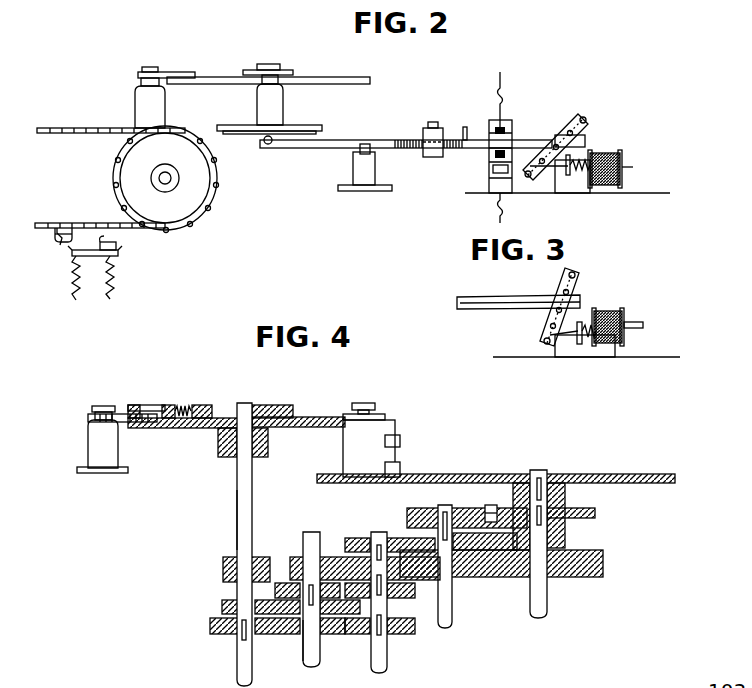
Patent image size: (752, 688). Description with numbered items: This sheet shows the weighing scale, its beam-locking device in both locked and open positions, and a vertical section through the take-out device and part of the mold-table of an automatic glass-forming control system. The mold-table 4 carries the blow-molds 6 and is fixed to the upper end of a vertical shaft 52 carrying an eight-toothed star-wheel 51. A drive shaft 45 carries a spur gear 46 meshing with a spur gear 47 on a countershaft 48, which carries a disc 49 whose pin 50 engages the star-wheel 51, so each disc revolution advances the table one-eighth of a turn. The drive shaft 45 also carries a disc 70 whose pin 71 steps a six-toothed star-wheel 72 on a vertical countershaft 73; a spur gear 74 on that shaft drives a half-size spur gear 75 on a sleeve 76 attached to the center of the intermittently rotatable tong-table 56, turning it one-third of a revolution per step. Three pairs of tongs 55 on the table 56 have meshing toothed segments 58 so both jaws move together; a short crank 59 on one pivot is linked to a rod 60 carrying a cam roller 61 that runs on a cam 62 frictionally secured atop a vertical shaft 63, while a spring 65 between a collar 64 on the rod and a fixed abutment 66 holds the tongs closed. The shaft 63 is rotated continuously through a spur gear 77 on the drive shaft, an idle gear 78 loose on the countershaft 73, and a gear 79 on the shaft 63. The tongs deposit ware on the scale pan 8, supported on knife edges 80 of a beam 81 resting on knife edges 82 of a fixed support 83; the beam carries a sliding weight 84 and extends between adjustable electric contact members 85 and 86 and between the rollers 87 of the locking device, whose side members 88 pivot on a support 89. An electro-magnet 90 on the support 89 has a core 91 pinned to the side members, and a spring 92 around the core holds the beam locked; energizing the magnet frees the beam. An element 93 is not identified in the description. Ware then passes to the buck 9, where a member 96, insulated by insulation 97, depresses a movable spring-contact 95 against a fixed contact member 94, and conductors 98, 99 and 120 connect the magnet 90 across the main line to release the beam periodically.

In FIG. 4, the mold-table 4 is at (622, 474).
In FIG. 4, the blow-molds 6 is at (343, 452).
In FIG. 2, the scale pan 8 is at (232, 125).
In FIG. 2, the endless conveyor or buck 9 is at (80, 128).
In FIG. 4, the drive shaft 45 is at (379, 668).
In FIG. 4, the spur gear 46 is at (362, 540).
In FIG. 4, the spur gear 47 is at (478, 542).
In FIG. 4, the countershaft 48 is at (452, 602).
In FIG. 4, the disc 49 is at (422, 508).
In FIG. 4, the pin 50 is at (490, 505).
In FIG. 4, the star-wheel 51 is at (582, 508).
In FIG. 4, the vertical shaft 52 is at (545, 596).
In FIG. 2, the tongs 55 is at (170, 73).
In FIG. 4, the tongs 55 is at (92, 417).
In FIG. 4, the intermittently rotatable table 56 is at (318, 413).
In FIG. 4, the toothed segments 58 is at (141, 424).
In FIG. 4, the short crank 59 is at (130, 410).
In FIG. 4, the rod 60 is at (150, 408).
In FIG. 4, the cam roller 61 is at (200, 428).
In FIG. 4, the cam 62 is at (277, 402).
In FIG. 4, the vertical shaft 63 is at (244, 487).
In FIG. 4, the collar 64 is at (201, 405).
In FIG. 4, the spring 65 is at (183, 405).
In FIG. 4, the fixed abutment 66 is at (168, 405).
In FIG. 4, the disc 70 is at (392, 598).
In FIG. 4, the pin 71 is at (338, 556).
In FIG. 4, the star-wheel 72 is at (287, 583).
In FIG. 4, the vertical countershaft 73 is at (312, 660).
In FIG. 4, the spur gear 74 is at (290, 634).
In FIG. 4, the spur gear 75 is at (222, 607).
In FIG. 4, the sleeve 76 is at (238, 520).
In FIG. 4, the spur gear 77 is at (404, 634).
In FIG. 4, the idle gear 78 is at (337, 634).
In FIG. 4, the gear 79 is at (222, 634).
In FIG. 2, the knife edges 80 is at (267, 145).
In FIG. 2, the beam 81 is at (320, 148).
In FIG. 3, the beam 81 is at (481, 302).
In FIG. 2, the knife edges 82 is at (363, 150).
In FIG. 2, the fixed support 83 is at (375, 172).
In FIG. 2, the sliding weight 84 is at (425, 132).
In FIG. 2, the adjustable electric contact member 85 is at (504, 130).
In FIG. 2, the adjustable electric contact member 86 is at (496, 154).
In FIG. 2, the rollers 87 is at (597, 125).
In FIG. 3, the rollers 87 is at (576, 283).
In FIG. 2, the side members 88 is at (566, 133).
In FIG. 3, the side members 88 is at (559, 307).
In FIG. 2, the support 89 is at (584, 161).
In FIG. 3, the support 89 is at (590, 320).
In FIG. 2, the electro-magnet 90 is at (622, 165).
In FIG. 3, the electro-magnet 90 is at (626, 318).
In FIG. 2, the core 91 is at (550, 170).
In FIG. 3, the core 91 is at (561, 346).
In FIG. 2, the spring 92 is at (580, 193).
In FIG. 3, the spring 92 is at (585, 346).
In FIG. 2, the stop pin 93 is at (467, 123).
In FIG. 2, the fixed contact member 94 is at (100, 251).
In FIG. 2, the movable spring-contact 95 is at (104, 238).
In FIG. 2, the switch-closing member 96 is at (62, 242).
In FIG. 2, the insulation 97 is at (65, 228).
In FIG. 2, the conductor 98 is at (116, 280).
In FIG. 2, the conductor 99 is at (88, 280).
In FIG. 2, the conductor 120 is at (497, 80).